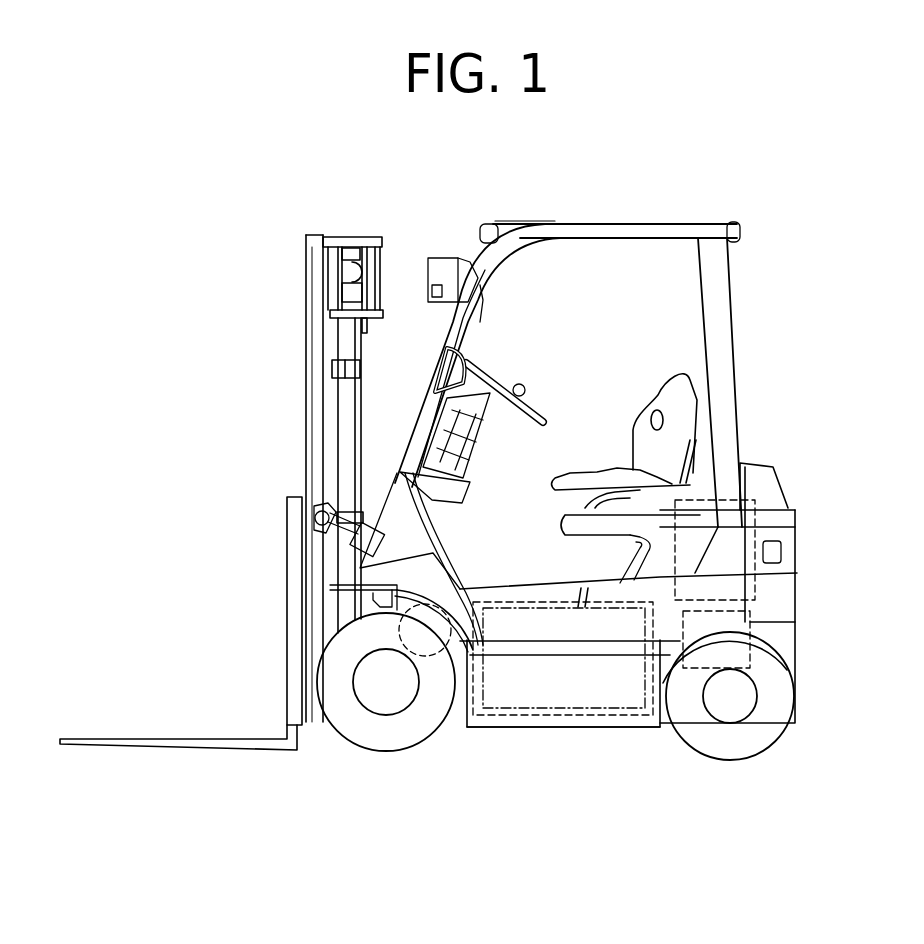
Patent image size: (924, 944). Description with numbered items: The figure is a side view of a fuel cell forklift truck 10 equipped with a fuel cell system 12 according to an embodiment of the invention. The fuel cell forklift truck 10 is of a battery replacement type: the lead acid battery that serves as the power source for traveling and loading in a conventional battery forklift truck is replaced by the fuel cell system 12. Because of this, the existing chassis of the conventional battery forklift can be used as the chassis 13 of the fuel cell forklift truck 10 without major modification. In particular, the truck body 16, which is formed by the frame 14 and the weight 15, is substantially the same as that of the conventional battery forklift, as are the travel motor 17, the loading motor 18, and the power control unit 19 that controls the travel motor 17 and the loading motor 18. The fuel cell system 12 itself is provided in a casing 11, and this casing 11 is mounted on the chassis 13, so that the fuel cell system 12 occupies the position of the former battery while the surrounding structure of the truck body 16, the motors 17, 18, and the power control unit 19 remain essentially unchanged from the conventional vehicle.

The fuel cell forklift truck 10 is at (776, 290).
The casing 11 is at (543, 595).
The fuel cell system 12 is at (596, 710).
The chassis 13 is at (542, 732).
The frame 14 is at (657, 590).
The weight 15 is at (768, 490).
The truck body 16 is at (838, 370).
The travel motor 17 is at (423, 658).
The loading motor 18 is at (772, 684).
The power control unit 19 is at (772, 522).